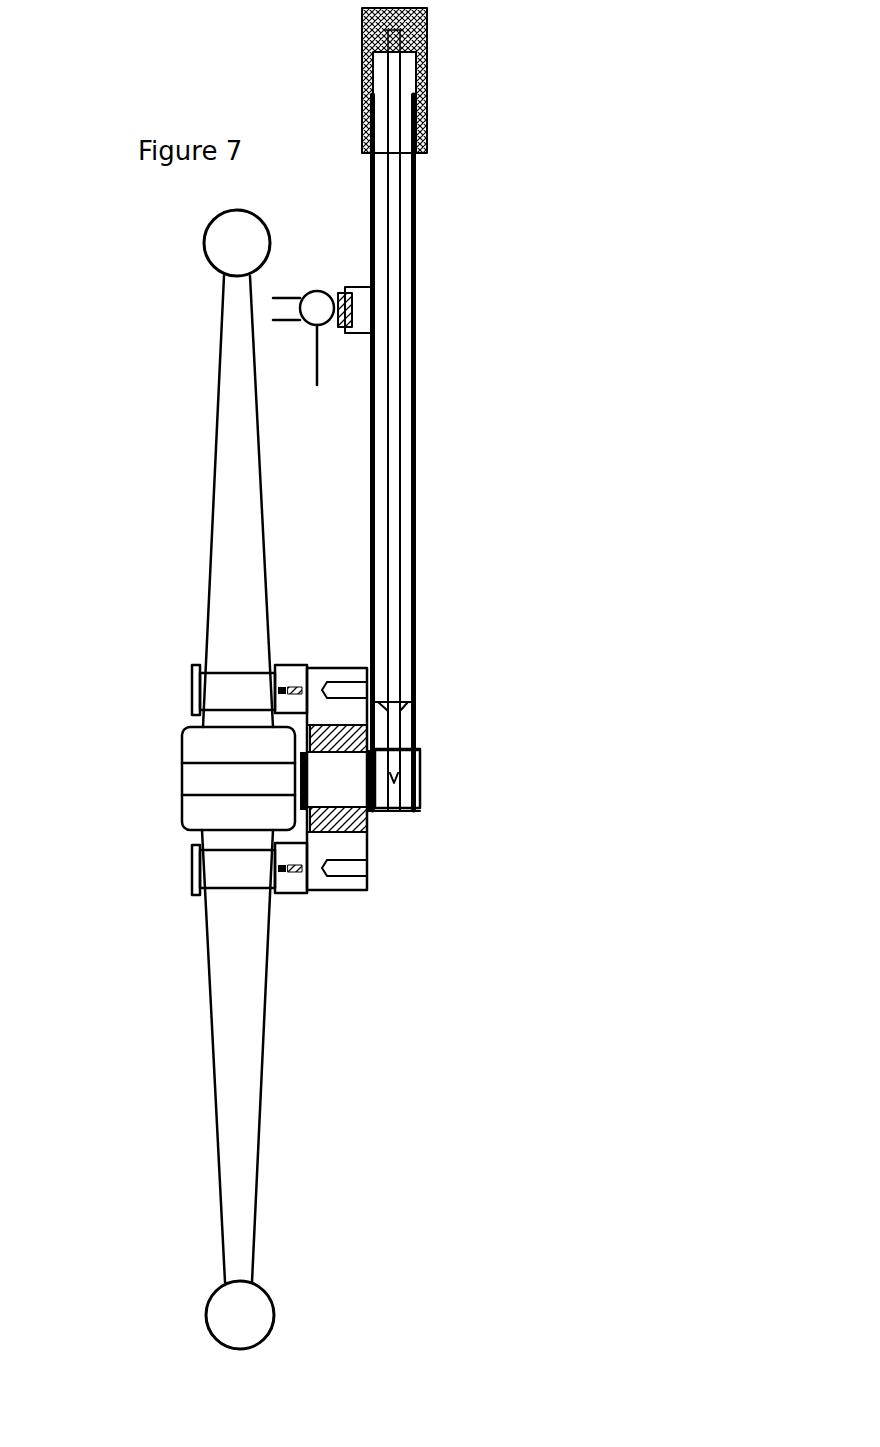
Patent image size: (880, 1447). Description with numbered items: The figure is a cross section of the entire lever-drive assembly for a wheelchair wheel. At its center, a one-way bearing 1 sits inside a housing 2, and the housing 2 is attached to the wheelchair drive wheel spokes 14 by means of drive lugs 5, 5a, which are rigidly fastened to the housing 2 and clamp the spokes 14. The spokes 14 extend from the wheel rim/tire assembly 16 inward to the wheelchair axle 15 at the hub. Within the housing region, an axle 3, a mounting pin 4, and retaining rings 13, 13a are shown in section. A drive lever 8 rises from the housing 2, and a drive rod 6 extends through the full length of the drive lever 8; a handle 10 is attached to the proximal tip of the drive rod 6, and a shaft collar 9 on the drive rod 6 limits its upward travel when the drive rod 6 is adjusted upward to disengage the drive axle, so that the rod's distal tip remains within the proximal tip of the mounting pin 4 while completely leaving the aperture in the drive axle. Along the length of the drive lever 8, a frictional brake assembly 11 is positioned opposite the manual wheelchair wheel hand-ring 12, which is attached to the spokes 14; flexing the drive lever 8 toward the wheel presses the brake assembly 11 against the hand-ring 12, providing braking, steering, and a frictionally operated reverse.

The one-way bearing 1 is at (333, 830).
The housing 2 is at (323, 892).
The axle 3 is at (433, 791).
The mounting pin 4 is at (420, 749).
The drive lug 5 is at (212, 864).
The drive lug 5a is at (218, 685).
The drive rod 6 is at (408, 100).
The drive lever 8 is at (429, 266).
The shaft collar 9 is at (416, 136).
The handle 10 is at (425, 27).
The frictional brake assembly 11 is at (364, 315).
The hand-ring 12 is at (308, 358).
The retaining ring 13 is at (370, 805).
The retaining ring 13a is at (400, 865).
The spokes 14 is at (229, 576).
The wheelchair axle 15 is at (231, 773).
The wheel rim/tire assembly 16 is at (225, 237).